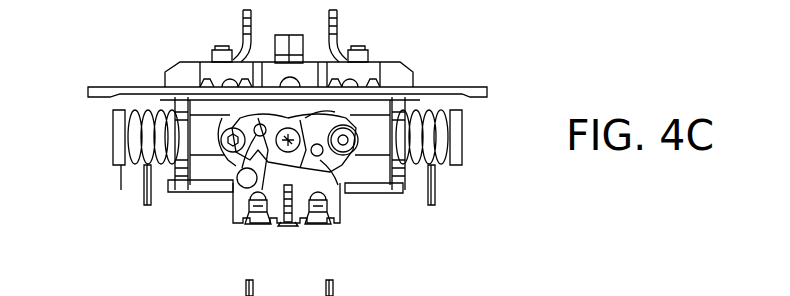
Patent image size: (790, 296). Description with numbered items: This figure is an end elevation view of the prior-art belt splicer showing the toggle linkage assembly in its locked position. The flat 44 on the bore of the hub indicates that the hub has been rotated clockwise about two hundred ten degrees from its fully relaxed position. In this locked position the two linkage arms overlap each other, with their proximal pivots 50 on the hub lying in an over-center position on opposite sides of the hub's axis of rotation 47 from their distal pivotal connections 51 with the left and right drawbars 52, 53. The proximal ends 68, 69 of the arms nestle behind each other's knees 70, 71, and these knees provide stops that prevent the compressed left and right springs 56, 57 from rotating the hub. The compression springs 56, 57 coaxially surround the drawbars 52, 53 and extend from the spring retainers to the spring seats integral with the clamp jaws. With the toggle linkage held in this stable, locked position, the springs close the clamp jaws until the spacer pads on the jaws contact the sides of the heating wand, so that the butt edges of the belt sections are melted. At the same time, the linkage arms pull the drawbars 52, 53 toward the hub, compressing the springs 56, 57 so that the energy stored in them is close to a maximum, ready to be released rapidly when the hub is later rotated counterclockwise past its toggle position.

The flat 44 is at (308, 118).
The axis of rotation 47 is at (296, 157).
The proximal pivots 50 is at (240, 182).
The distal pivots 51 is at (358, 150).
The left drawbar 52 is at (138, 102).
The right drawbar 53 is at (435, 160).
The left compression spring 56 is at (133, 168).
The right compression spring 57 is at (437, 130).
The proximal end 68 is at (332, 155).
The proximal end 69 is at (250, 115).
The knee 70 is at (230, 195).
The knee 71 is at (327, 167).